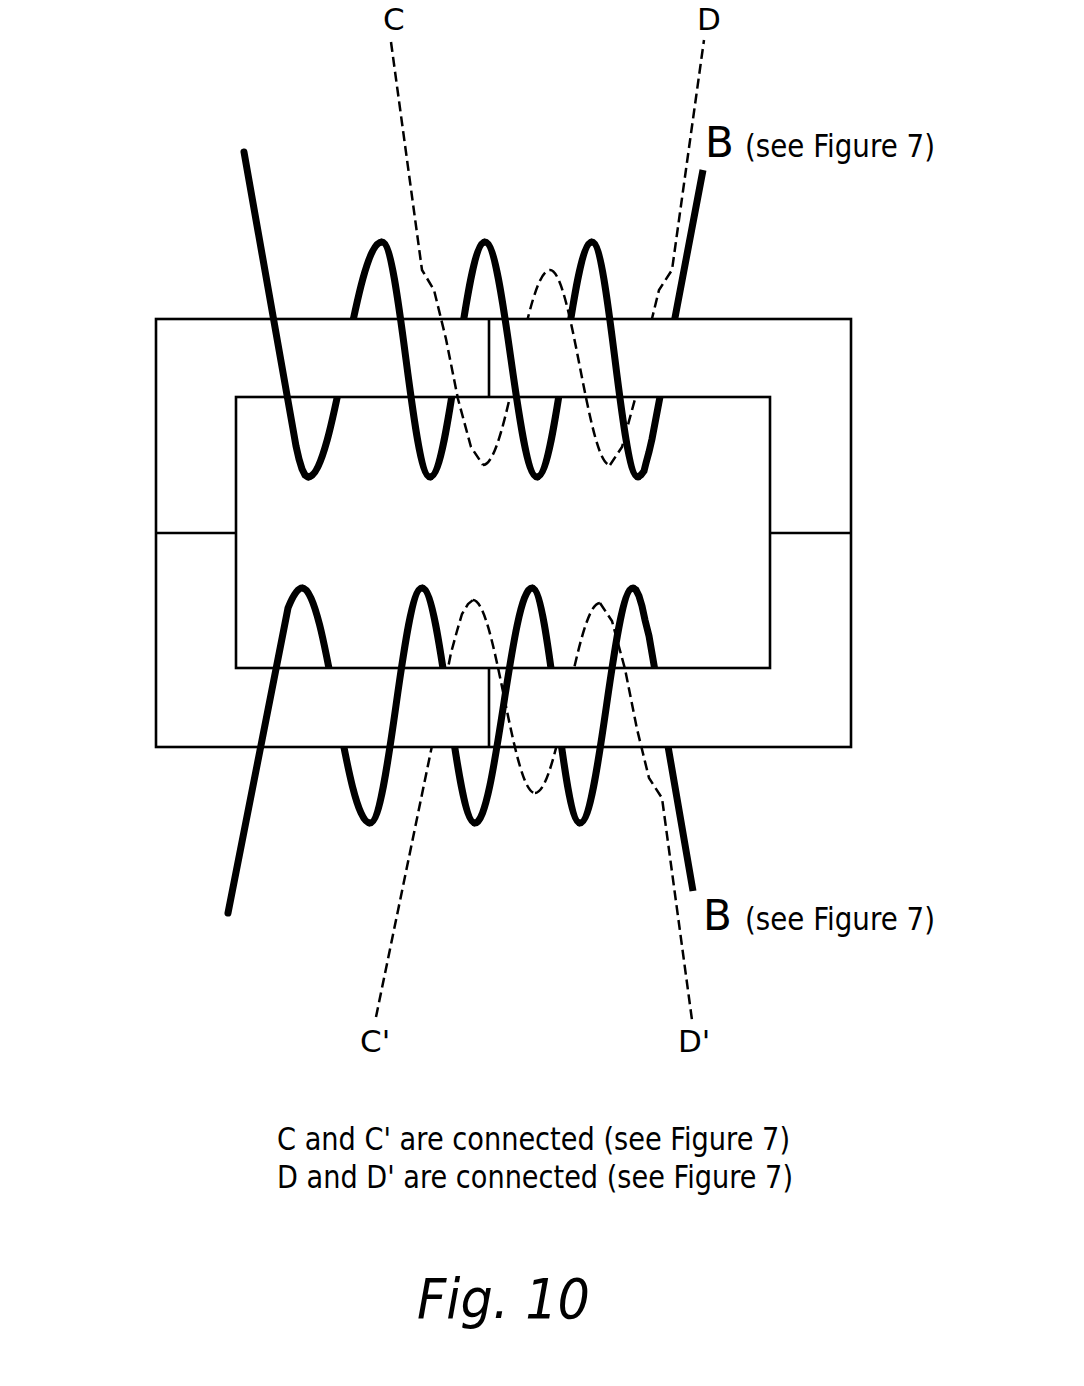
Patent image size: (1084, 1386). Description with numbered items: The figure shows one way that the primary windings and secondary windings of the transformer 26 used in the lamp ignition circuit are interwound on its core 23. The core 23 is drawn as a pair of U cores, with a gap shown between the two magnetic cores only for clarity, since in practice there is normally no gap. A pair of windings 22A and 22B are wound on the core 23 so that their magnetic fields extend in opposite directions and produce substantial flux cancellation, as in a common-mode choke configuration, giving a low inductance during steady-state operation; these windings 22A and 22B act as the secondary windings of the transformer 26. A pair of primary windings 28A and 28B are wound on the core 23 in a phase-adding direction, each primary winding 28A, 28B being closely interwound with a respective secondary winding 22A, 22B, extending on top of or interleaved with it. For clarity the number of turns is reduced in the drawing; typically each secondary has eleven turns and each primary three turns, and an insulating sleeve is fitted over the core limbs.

The secondary winding 22A is at (362, 262).
The secondary winding 22B is at (350, 793).
The primary winding 28A is at (418, 203).
The primary winding 28B is at (410, 822).
The core 23 is at (163, 608).
The transformer 26 is at (499, 530).